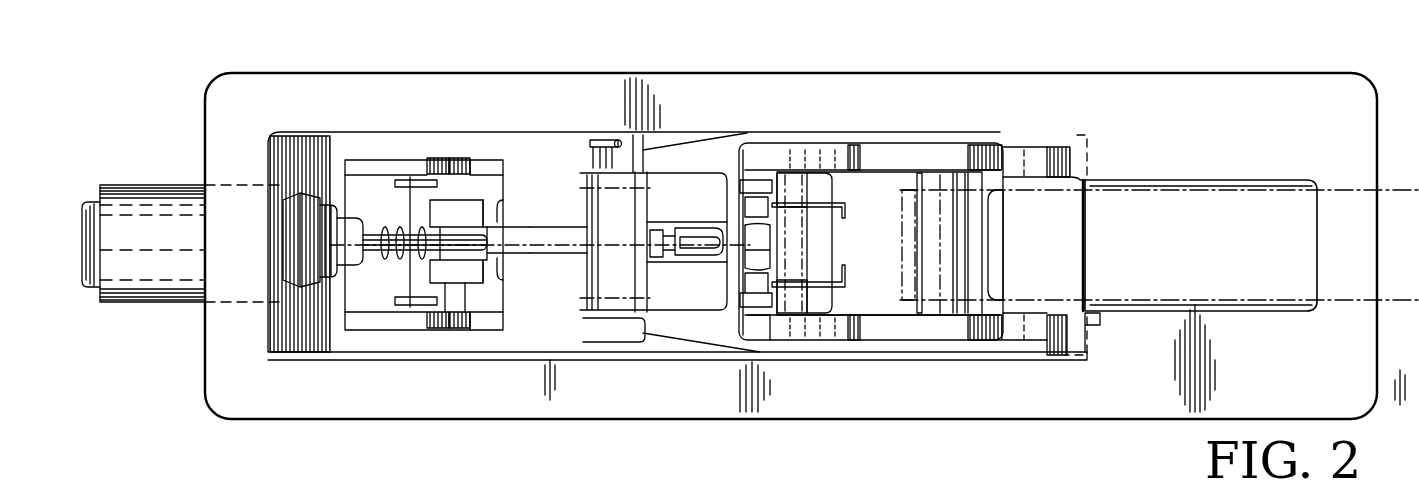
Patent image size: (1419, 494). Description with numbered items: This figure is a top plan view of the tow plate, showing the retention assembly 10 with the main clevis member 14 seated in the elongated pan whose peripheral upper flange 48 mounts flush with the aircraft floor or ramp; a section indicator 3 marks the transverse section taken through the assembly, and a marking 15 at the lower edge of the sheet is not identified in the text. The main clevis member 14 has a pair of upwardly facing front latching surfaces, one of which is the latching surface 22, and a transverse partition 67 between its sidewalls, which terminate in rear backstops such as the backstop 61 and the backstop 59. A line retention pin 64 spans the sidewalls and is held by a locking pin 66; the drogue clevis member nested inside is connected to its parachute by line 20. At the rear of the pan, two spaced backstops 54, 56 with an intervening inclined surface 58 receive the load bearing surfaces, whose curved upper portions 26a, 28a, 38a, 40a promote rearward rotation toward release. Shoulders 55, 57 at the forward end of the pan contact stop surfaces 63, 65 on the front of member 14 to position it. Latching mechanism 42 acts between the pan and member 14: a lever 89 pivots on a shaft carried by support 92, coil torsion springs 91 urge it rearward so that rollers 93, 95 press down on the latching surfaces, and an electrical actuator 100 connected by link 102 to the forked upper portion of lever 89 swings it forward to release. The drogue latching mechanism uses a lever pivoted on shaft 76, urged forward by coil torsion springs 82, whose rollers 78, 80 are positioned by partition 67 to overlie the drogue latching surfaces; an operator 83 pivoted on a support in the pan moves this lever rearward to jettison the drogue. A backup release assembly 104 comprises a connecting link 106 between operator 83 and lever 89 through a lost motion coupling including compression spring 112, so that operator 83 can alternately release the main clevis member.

The retention assembly 10 is at (175, 82).
The electrical actuator 100 is at (152, 205).
The section line 3 is at (62, 270).
The main clevis member 14 is at (700, 142).
The compression spring 112 is at (395, 295).
The support 92 is at (352, 168).
The link 102 is at (385, 190).
The coil torsion springs 91 is at (405, 180).
The roller 95 is at (435, 198).
The lever 89 is at (452, 200).
The shoulder 55 is at (430, 158).
The stop surface 63 is at (452, 158).
The shoulder 57 is at (432, 330).
The stop surface 65 is at (452, 330).
The roller 93 is at (455, 330).
The front latching surface 22 is at (470, 332).
The latching mechanism 42 is at (490, 266).
The connecting link 106 is at (513, 235).
The backup release assembly 104 is at (551, 233).
The locking pin 66 is at (604, 138).
The line retention pin 64 is at (637, 134).
The operator 83 is at (718, 238).
The roller 80 is at (760, 178).
The transverse partition 67 is at (740, 300).
The rear backstop 61 is at (1037, 148).
The curved upper portion 40a is at (985, 148).
The curved upper portion 38a is at (990, 342).
The curved upper portion 28a is at (1060, 147).
The rear backstop 59 is at (1030, 340).
The curved upper portion 26a is at (1060, 355).
The backstop 56 is at (1078, 170).
The backstop 54 is at (1075, 325).
The inclined surface 58 is at (1200, 245).
The line 20 is at (1395, 190).
The peripheral upper flange 48 is at (975, 245).
The shaft 76 is at (795, 192).
The coil torsion springs 82 is at (845, 272).
The roller 78 is at (760, 315).
The reference 15 is at (496, 484).